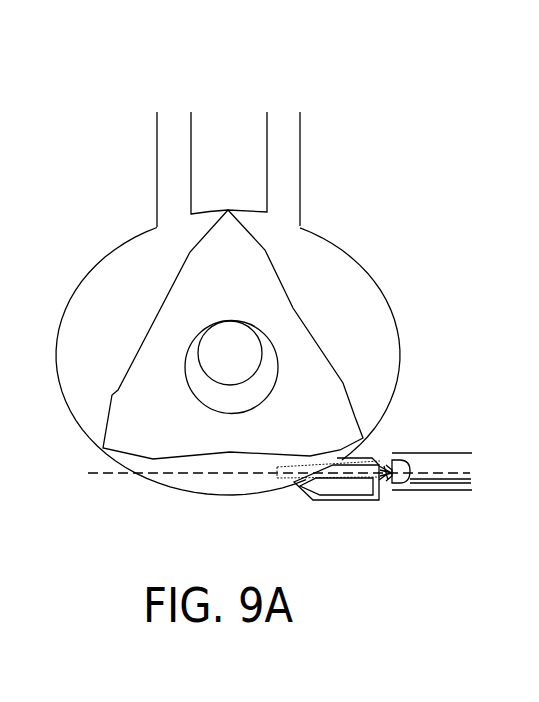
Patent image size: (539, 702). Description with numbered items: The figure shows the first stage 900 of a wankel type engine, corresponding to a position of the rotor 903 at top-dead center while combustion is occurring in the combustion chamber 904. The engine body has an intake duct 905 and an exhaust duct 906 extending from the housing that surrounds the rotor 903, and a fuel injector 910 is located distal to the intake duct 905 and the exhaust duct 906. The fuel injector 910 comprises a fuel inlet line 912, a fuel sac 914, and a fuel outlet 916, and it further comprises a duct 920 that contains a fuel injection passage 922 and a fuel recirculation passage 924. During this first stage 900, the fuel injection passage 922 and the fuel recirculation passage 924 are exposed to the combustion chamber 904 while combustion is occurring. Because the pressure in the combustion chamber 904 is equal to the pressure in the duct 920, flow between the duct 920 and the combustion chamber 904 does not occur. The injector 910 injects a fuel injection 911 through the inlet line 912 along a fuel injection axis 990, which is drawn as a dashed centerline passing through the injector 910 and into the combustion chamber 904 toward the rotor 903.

The first stage 900 is at (393, 19).
The rotor 903 is at (293, 308).
The combustion chamber 904 is at (356, 257).
The intake duct 905 is at (300, 165).
The exhaust duct 906 is at (157, 165).
The fuel injector 910 is at (465, 453).
The fuel injection 911 is at (286, 480).
The fuel inlet line 912 is at (462, 484).
The fuel sac 914 is at (405, 485).
The fuel outlet 916 is at (385, 478).
The duct 920 is at (384, 470).
The fuel injection passage 922 is at (368, 495).
The fuel recirculation passage 924 is at (318, 502).
The fuel injection axis 990 is at (112, 474).